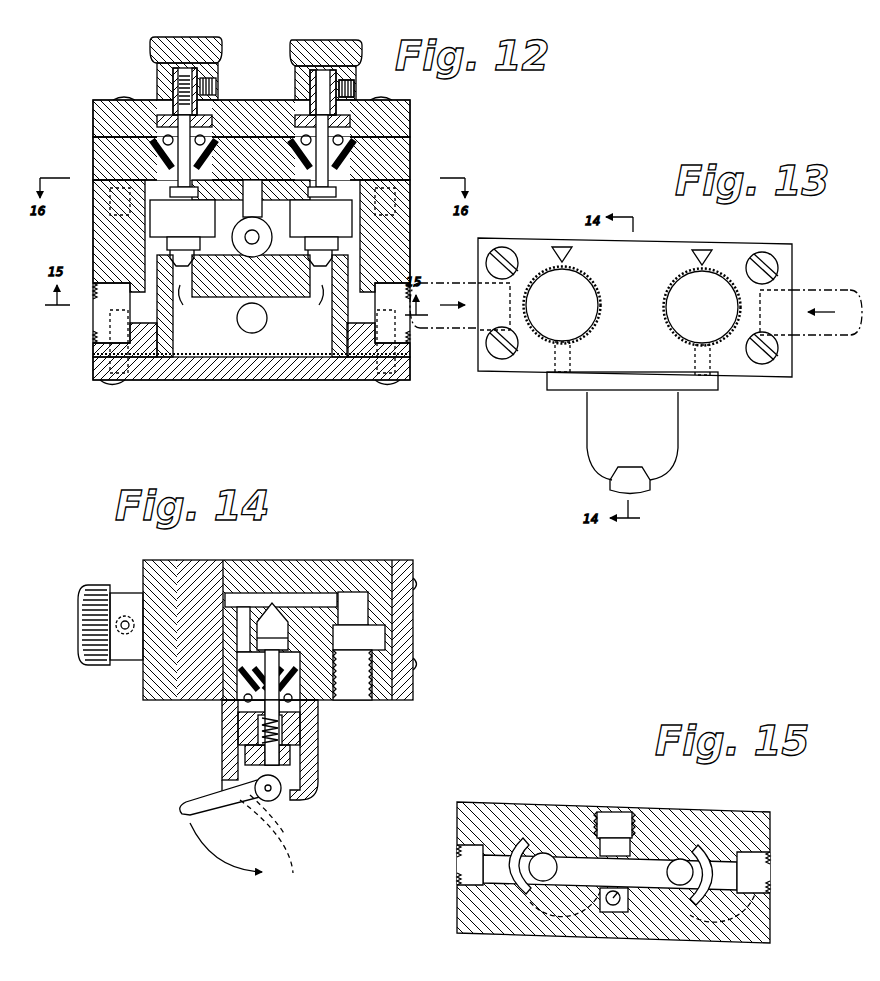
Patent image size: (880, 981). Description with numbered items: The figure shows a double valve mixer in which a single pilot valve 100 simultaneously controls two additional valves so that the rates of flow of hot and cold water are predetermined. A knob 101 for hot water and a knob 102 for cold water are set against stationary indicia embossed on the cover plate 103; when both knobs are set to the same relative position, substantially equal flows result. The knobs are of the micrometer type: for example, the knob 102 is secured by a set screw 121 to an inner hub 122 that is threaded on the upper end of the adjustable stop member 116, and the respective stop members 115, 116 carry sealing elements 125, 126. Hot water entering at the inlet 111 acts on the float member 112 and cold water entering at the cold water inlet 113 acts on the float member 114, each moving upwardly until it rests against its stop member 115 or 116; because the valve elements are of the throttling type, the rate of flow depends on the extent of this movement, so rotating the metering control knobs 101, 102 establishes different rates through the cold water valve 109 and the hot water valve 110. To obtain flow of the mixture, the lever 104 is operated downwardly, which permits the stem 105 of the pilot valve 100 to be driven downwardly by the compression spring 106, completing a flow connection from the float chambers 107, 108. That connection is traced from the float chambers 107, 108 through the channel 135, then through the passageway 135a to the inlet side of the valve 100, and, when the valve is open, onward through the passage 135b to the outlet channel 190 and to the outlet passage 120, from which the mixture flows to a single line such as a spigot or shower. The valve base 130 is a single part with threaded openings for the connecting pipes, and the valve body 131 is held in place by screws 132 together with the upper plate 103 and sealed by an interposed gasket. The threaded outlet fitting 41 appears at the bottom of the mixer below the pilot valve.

In FIG. 14, the threaded outlet fitting 41 is at (315, 690).
In FIG. 12, the pilot valve 100 is at (255, 240).
In FIG. 14, the pilot valve 100 is at (278, 630).
In FIG. 12, the knob 101 is at (170, 40).
In FIG. 13, the knob 101 is at (580, 282).
In FIG. 14, the knob 101 is at (86, 620).
In FIG. 12, the knob 102 is at (328, 42).
In FIG. 13, the knob 102 is at (678, 283).
In FIG. 12, the cover plate 103 is at (100, 110).
In FIG. 13, the cover plate 103 is at (745, 378).
In FIG. 14, the cover plate 103 is at (160, 690).
In FIG. 13, the lever 104 is at (652, 488).
In FIG. 14, the lever 104 is at (190, 800).
In FIG. 14, the stem 105 is at (262, 715).
In FIG. 14, the compression spring 106 is at (285, 734).
In FIG. 12, the float chamber 107 is at (140, 191).
In FIG. 12, the float chamber 108 is at (355, 192).
In FIG. 12, the cold water valve 109 is at (193, 301).
In FIG. 15, the cold water valve 109 is at (543, 860).
In FIG. 12, the hot water valve 110 is at (307, 301).
In FIG. 15, the hot water valve 110 is at (682, 868).
In FIG. 12, the inlet 111 is at (93, 320).
In FIG. 15, the inlet 111 is at (465, 870).
In FIG. 12, the float member 112 is at (182, 233).
In FIG. 12, the cold water inlet 113 is at (405, 335).
In FIG. 15, the cold water inlet 113 is at (760, 878).
In FIG. 12, the float member 114 is at (321, 233).
In FIG. 12, the adjustable stop member 115 is at (184, 198).
In FIG. 12, the adjustable stop member 116 is at (321, 198).
In FIG. 12, the passage 120 is at (246, 326).
In FIG. 14, the passage 120 is at (360, 612).
In FIG. 15, the passage 120 is at (615, 820).
In FIG. 12, the set screw 121 is at (352, 94).
In FIG. 12, the inner hub 122 is at (306, 78).
In FIG. 12, the sealing element 125 is at (148, 142).
In FIG. 12, the sealing element 126 is at (342, 148).
In FIG. 12, the valve base 130 is at (410, 255).
In FIG. 12, the valve body 131 is at (95, 157).
In FIG. 14, the valve body 131 is at (196, 560).
In FIG. 12, the screws 132 is at (390, 103).
In FIG. 13, the screws 132 is at (780, 268).
In FIG. 12, the channel 135 is at (262, 192).
In FIG. 14, the channel 135 is at (231, 595).
In FIG. 14, the passageway 135a is at (250, 620).
In FIG. 12, the passage 135b is at (247, 297).
In FIG. 14, the passage 135b is at (325, 598).
In FIG. 15, the passage 135b is at (611, 903).
In FIG. 12, the outlet channel 190 is at (313, 352).
In FIG. 14, the outlet channel 190 is at (380, 656).
In FIG. 15, the outlet channel 190 is at (640, 862).